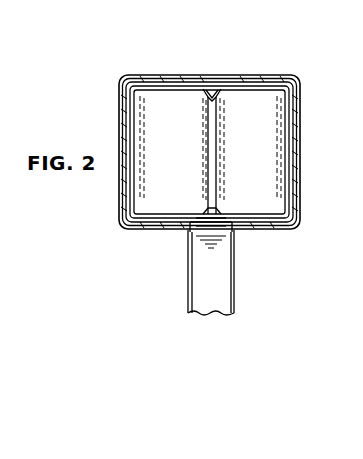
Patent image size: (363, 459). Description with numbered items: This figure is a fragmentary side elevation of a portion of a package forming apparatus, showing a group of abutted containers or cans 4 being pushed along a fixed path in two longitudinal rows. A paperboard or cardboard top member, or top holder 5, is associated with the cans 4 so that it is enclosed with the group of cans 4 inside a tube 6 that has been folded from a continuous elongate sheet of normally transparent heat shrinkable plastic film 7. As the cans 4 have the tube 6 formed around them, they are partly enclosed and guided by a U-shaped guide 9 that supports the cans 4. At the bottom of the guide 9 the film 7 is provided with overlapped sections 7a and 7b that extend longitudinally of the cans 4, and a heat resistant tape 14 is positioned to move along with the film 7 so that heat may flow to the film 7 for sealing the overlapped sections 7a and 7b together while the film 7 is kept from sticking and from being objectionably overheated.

The cans 4 is at (172, 98).
The top holder 5 is at (168, 78).
The tube 6 is at (304, 127).
The heat shrinkable plastic film 7 is at (299, 172).
The overlapped section 7a is at (205, 222).
The overlapped section 7b is at (200, 229).
The U-shaped guide 9 is at (134, 193).
The heat resistant tape 14 is at (225, 263).